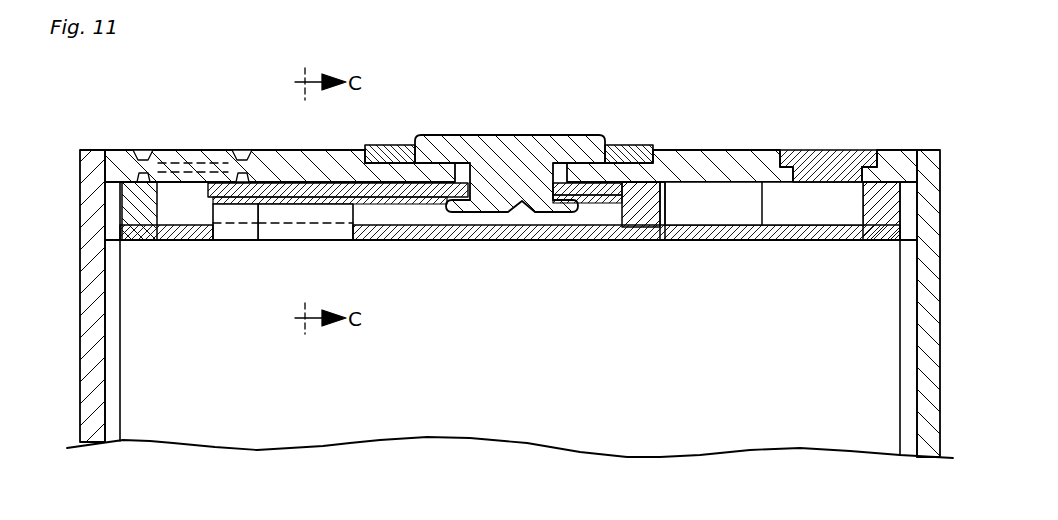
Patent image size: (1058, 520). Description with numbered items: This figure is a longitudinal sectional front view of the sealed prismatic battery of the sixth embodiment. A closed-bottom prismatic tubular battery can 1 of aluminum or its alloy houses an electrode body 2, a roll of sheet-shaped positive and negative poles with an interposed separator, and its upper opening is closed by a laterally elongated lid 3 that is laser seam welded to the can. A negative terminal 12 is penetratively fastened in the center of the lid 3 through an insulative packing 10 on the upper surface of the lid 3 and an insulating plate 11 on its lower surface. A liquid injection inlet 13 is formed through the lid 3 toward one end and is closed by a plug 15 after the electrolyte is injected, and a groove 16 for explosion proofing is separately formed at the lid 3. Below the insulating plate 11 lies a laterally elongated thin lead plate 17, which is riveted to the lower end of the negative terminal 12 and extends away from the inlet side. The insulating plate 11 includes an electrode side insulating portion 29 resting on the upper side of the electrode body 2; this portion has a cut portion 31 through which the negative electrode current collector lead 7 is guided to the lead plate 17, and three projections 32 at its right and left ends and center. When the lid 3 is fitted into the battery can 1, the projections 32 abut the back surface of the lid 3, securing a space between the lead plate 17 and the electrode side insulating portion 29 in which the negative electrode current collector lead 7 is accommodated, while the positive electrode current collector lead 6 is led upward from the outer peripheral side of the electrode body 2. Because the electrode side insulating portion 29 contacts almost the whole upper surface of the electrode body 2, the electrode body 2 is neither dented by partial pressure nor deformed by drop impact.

The battery can 1 is at (80, 173).
The electrode body 2 is at (432, 413).
The lid 3 is at (703, 131).
The positive electrode current collector lead 6 is at (733, 188).
The negative electrode current collector lead 7 is at (310, 207).
The insulative packing 10 is at (400, 145).
The insulating plate 11 is at (698, 260).
The negative terminal 12 is at (505, 135).
The liquid injection inlet 13 is at (852, 176).
The plug 15 is at (815, 158).
The groove for explosion proofing 16 is at (143, 158).
The lead plate 17 is at (412, 197).
The electrode side insulating portion 29 is at (507, 236).
The cut portion 31 is at (243, 226).
The projections 32 is at (150, 197).